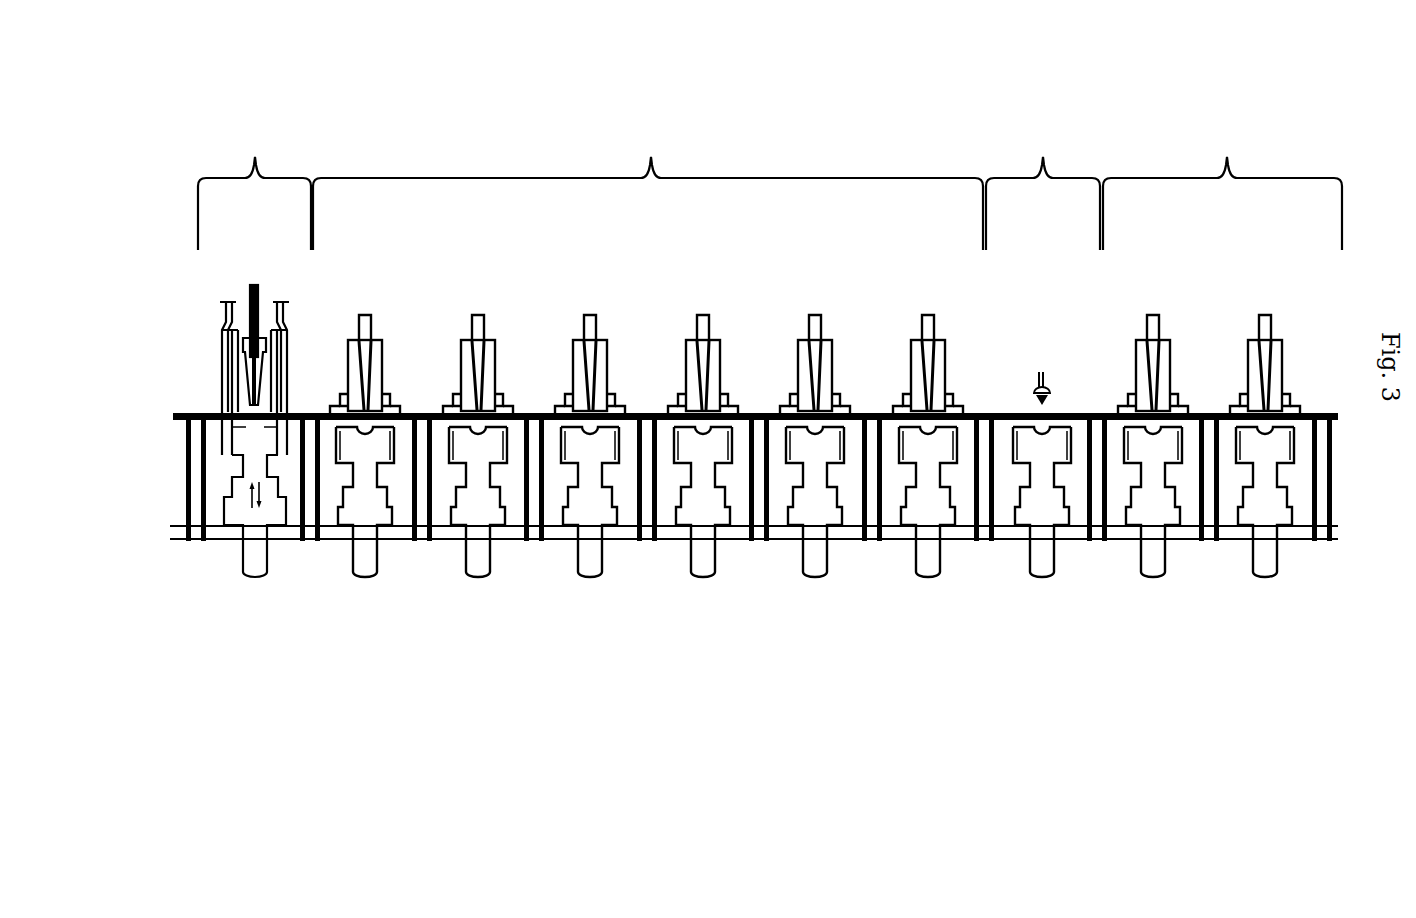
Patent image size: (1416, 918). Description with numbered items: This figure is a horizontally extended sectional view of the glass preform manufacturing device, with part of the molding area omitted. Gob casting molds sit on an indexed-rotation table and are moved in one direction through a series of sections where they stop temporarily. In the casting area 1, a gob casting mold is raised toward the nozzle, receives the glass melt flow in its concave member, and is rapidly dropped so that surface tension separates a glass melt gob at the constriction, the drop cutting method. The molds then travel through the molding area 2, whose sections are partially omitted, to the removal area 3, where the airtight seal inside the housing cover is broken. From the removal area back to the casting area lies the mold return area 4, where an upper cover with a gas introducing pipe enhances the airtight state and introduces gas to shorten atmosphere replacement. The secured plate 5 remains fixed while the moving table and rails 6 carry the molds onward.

The casting station (casting area) 1 is at (250, 339).
The molding stations (molding area) 2 is at (648, 311).
The removal station (removal area) 3 is at (1055, 311).
The mold return stations (atmosphere replacement area) 4 is at (1263, 311).
The secured carrier plate 5 is at (173, 420).
The moving conveyor rails and posts 6 is at (1025, 682).